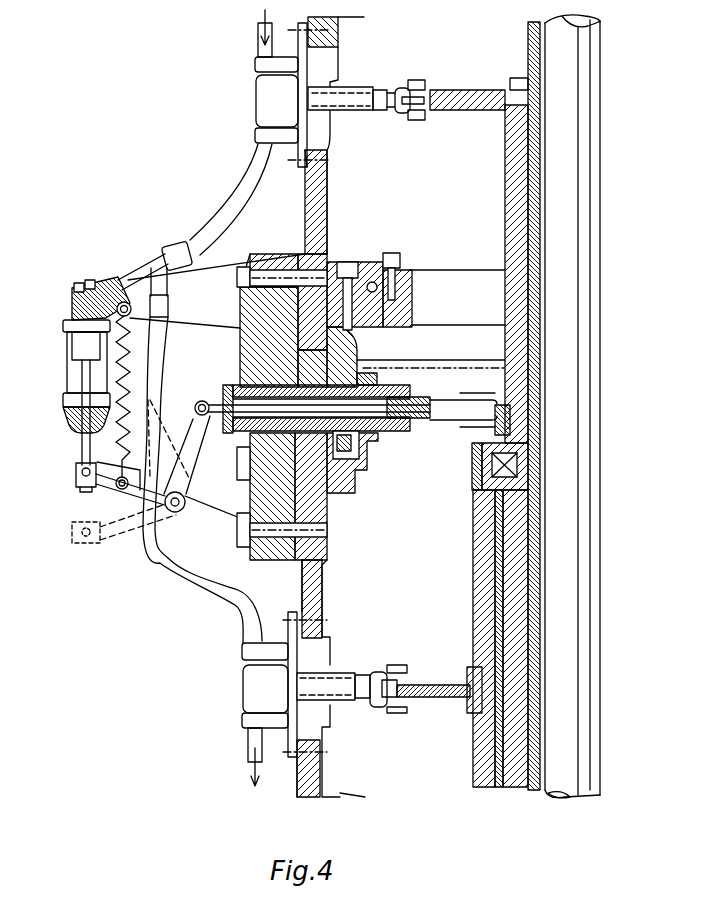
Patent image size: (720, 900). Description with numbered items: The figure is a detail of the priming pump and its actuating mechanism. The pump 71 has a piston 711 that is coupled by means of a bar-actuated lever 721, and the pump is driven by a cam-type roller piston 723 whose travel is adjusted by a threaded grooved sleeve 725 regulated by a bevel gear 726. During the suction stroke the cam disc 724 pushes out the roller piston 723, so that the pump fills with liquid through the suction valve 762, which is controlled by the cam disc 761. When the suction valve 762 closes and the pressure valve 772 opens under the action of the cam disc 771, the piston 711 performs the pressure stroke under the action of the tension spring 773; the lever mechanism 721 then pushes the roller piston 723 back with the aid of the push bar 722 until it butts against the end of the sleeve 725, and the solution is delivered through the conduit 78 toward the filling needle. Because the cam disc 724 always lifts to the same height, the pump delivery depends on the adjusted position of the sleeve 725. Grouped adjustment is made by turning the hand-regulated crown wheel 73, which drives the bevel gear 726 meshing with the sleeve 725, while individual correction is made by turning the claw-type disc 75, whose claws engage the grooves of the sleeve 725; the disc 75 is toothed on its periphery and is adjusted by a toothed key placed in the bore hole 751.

The pump 71 is at (63, 357).
The piston 711 is at (80, 441).
The lever 721 is at (93, 484).
The push bar 722 is at (222, 432).
The roller piston 723 is at (225, 402).
The cam disc 724 is at (508, 405).
The threaded grooved sleeve 725 is at (403, 436).
The bevel gear 726 is at (348, 452).
The crown wheel 73 is at (403, 268).
The claw-type disc 75 is at (238, 375).
The bore hole 751 is at (188, 510).
The cam disc 761 is at (453, 90).
The suction valve 762 is at (256, 92).
The cam disc 771 is at (432, 684).
The pressure valve 772 is at (242, 688).
The tension spring 773 is at (135, 286).
The conduit 78 is at (148, 550).